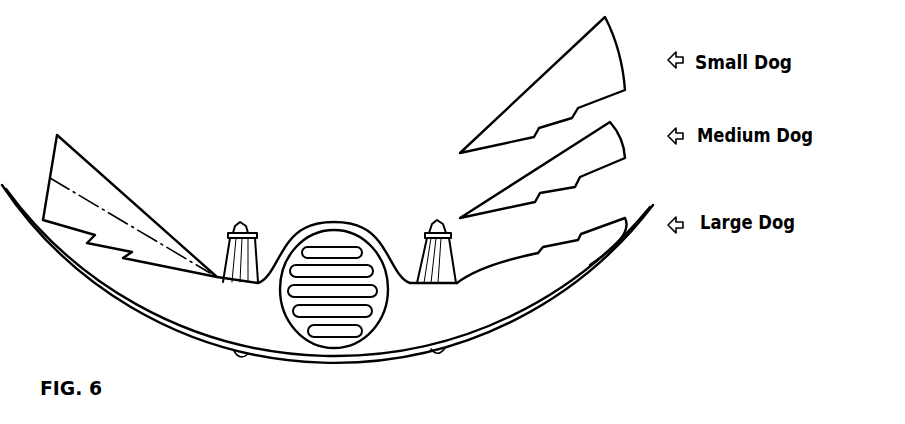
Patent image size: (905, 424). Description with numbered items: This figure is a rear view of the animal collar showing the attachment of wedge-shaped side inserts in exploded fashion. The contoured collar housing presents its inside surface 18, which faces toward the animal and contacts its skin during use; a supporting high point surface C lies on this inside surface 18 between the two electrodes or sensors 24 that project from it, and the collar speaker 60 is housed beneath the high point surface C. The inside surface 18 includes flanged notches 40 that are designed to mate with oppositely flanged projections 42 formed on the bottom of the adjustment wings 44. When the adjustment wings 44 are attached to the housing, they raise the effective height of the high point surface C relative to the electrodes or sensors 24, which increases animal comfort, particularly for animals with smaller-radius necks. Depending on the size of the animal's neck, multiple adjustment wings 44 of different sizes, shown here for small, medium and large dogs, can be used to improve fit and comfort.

The inside surface 18 is at (497, 263).
The electrodes or sensors 24 is at (247, 232).
The flanged notches 40 is at (543, 255).
The flanged projections 42 is at (556, 197).
The adjustment wings 44 is at (98, 183).
The collar speaker 60 is at (367, 322).
The high point surface C is at (328, 224).